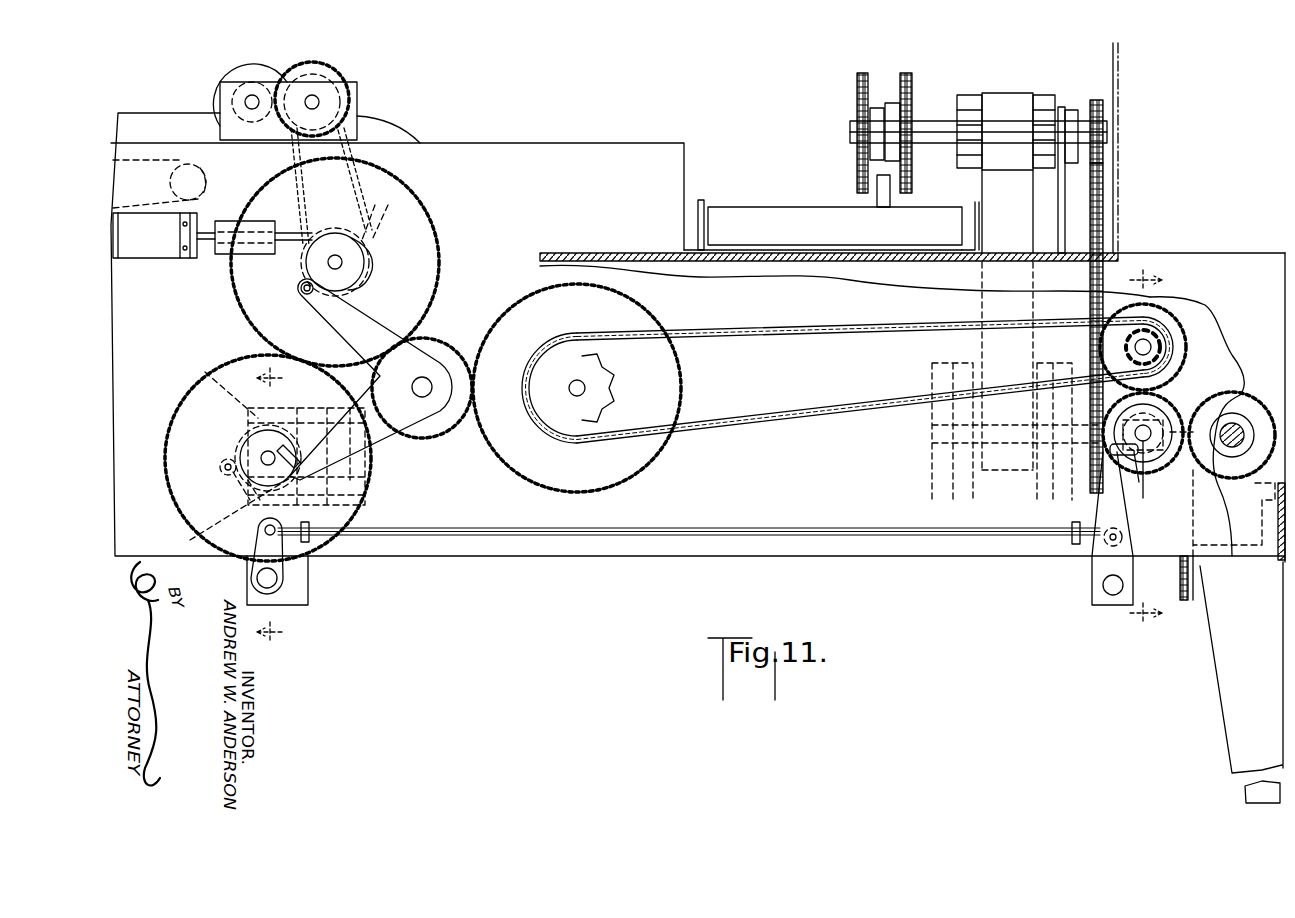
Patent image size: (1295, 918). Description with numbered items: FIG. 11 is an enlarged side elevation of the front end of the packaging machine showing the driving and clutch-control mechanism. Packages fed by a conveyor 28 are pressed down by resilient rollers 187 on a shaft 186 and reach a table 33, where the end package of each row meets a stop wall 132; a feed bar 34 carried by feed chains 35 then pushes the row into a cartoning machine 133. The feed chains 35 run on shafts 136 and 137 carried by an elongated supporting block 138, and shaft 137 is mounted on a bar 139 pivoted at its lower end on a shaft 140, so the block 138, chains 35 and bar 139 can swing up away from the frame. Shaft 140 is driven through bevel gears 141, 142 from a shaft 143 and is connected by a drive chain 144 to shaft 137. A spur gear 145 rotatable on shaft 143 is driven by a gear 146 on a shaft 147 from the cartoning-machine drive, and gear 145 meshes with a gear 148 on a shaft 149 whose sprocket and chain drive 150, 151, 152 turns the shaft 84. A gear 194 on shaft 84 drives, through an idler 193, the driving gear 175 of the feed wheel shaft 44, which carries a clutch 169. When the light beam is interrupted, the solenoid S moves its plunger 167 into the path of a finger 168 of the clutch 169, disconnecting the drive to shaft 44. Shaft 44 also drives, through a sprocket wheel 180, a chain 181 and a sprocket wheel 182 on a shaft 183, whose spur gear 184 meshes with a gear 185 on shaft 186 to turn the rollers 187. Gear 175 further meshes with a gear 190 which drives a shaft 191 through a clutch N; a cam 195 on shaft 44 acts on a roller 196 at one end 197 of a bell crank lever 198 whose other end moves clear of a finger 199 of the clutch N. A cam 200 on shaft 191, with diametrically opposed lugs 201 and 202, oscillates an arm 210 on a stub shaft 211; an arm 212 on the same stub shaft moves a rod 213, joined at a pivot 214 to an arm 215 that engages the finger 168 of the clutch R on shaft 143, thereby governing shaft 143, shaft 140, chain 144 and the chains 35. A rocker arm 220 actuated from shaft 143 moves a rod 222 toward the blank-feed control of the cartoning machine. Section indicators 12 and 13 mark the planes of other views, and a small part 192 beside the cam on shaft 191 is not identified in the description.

The section line 12- 12 is at (280, 503).
The section line 13- 13 is at (1135, 448).
The conveyor 28 is at (142, 160).
The table 33 is at (728, 245).
The feed bar 34 is at (785, 215).
The feed chains 35 is at (905, 70).
The feed wheel shaft 44 is at (337, 270).
The shaft 84 is at (577, 396).
The stop wall 132 is at (972, 210).
The cartoning machine 133 is at (1120, 96).
The shaft 136 is at (933, 120).
The shaft 137 is at (1088, 108).
The elongated supporting block 138 is at (1017, 93).
The bar or block 139 is at (1023, 225).
The shaft 140 is at (930, 440).
The bevel gear 141 is at (1207, 383).
The bevel gear 142 is at (1150, 458).
The shaft 143 is at (1131, 528).
The drive chain 144 is at (1105, 215).
The spur gear 145 is at (1172, 396).
The gear 146 is at (1228, 556).
The shaft 147 is at (1235, 430).
The gear 148 is at (1185, 340).
The shaft 149 is at (1148, 345).
The sprocket 150 is at (1128, 347).
The chain 151 is at (852, 332).
The sprocket 152 is at (613, 378).
The solenoid plunger 167 is at (297, 240).
The finger 168 is at (312, 262).
The clutch 169 is at (400, 216).
The driving gear 175 is at (456, 281).
The sprocket wheel 180 is at (330, 233).
The chain 181 is at (360, 147).
The sprocket wheel 182 is at (358, 102).
The shaft 183 is at (318, 98).
The spur gear 184 is at (346, 66).
The gear 185 is at (250, 120).
The shaft 186 is at (256, 98).
The resilient rollers 187 is at (245, 62).
The gear 190 is at (168, 480).
The shaft 191 is at (262, 455).
The cam 192 is at (250, 440).
The idler 193 is at (450, 345).
The gear 194 is at (522, 468).
The cam 195 is at (373, 270).
The roller 196 is at (303, 293).
The end of bell crank lever 197 is at (363, 333).
The bell crank lever 198 is at (405, 408).
The finger 199 is at (389, 446).
The cam 200 is at (222, 512).
The cam lug 201 is at (360, 508).
The cam lug 202 is at (218, 381).
The arm 210 is at (242, 497).
The stub shaft 211 is at (285, 582).
The arm 212 is at (285, 566).
The rod 213 is at (653, 530).
The pivot 214 is at (1110, 540).
The arm 215 is at (1100, 508).
The rocker arm 220 is at (1180, 578).
The rod 222 is at (1185, 600).
The clutch N is at (195, 450).
The clutch R is at (1133, 477).
The solenoid S is at (162, 250).